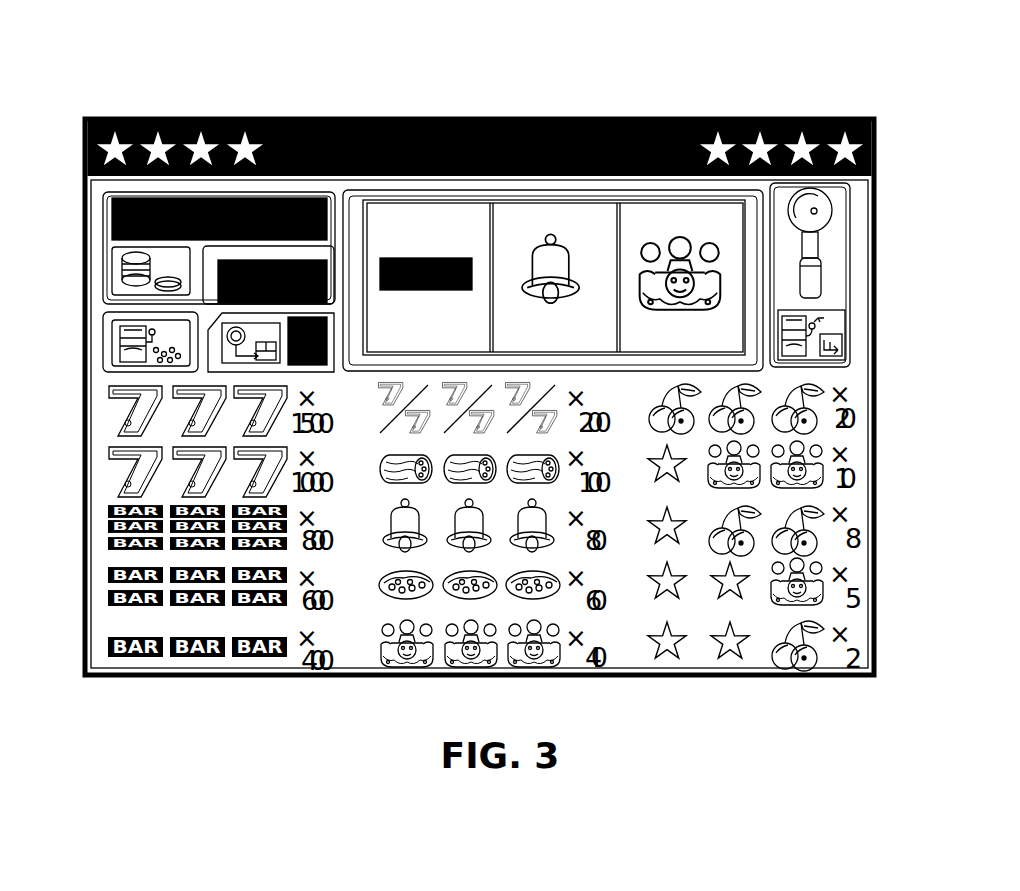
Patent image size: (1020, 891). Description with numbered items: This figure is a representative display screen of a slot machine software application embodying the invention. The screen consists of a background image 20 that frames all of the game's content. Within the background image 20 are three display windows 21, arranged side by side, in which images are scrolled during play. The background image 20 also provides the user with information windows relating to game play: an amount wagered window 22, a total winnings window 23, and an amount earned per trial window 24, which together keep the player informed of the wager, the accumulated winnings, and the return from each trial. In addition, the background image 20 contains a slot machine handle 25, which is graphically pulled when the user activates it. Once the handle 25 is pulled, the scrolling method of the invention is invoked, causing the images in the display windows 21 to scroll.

The background image 20 is at (707, 119).
The display windows 21 is at (645, 201).
The amount wagered window 22 is at (328, 345).
The total winnings window 23 is at (112, 217).
The amount earned per trial window 24 is at (328, 279).
The slot machine handle 25 is at (818, 265).